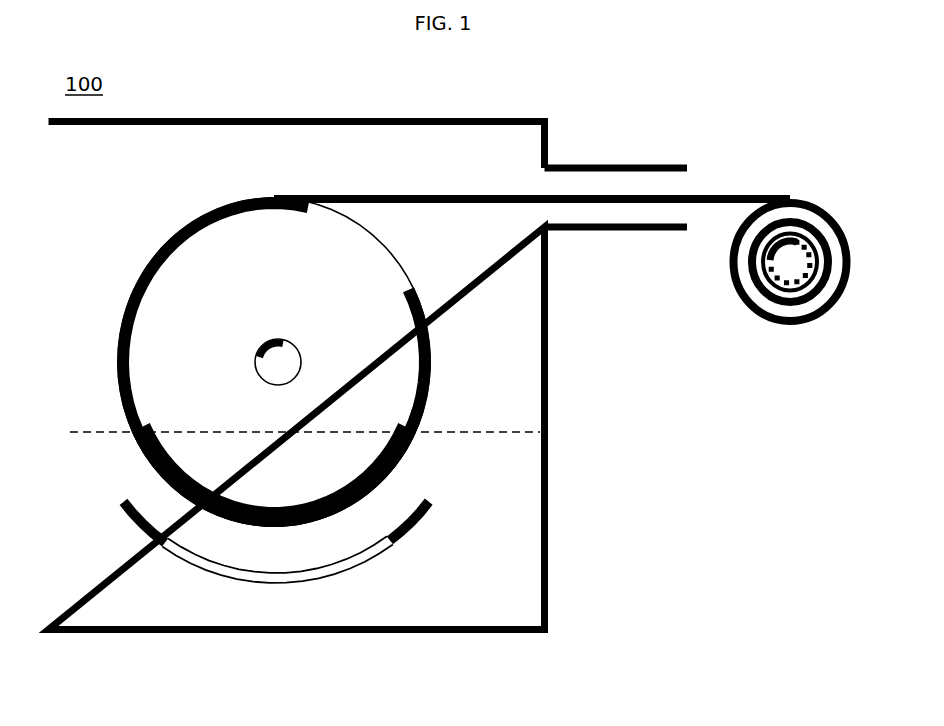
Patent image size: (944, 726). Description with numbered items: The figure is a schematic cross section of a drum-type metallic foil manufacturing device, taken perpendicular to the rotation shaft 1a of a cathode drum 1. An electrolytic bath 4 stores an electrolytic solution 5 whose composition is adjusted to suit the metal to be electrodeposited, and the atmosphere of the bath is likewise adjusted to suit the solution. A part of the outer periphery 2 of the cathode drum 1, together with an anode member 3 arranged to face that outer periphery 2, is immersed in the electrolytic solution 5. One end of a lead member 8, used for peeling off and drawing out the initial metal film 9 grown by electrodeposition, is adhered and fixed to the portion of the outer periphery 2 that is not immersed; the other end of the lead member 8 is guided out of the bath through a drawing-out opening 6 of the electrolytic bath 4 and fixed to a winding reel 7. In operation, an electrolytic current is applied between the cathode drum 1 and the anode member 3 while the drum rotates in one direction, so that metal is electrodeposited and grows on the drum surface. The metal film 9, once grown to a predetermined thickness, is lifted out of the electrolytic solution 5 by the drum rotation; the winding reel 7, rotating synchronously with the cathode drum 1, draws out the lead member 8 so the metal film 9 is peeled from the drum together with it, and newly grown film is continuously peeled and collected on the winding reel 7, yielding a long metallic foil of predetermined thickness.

The cathode drum 1 is at (367, 290).
The rotation shaft 1a is at (288, 362).
The outer periphery 2 is at (413, 282).
The anode member 3 is at (227, 580).
The electrolytic bath 4 is at (548, 517).
The electrolytic solution 5 is at (495, 617).
The drawing-out opening 6 is at (607, 166).
The winding reel 7 is at (772, 297).
The lead member 8 is at (408, 196).
The metal film 9 is at (407, 460).